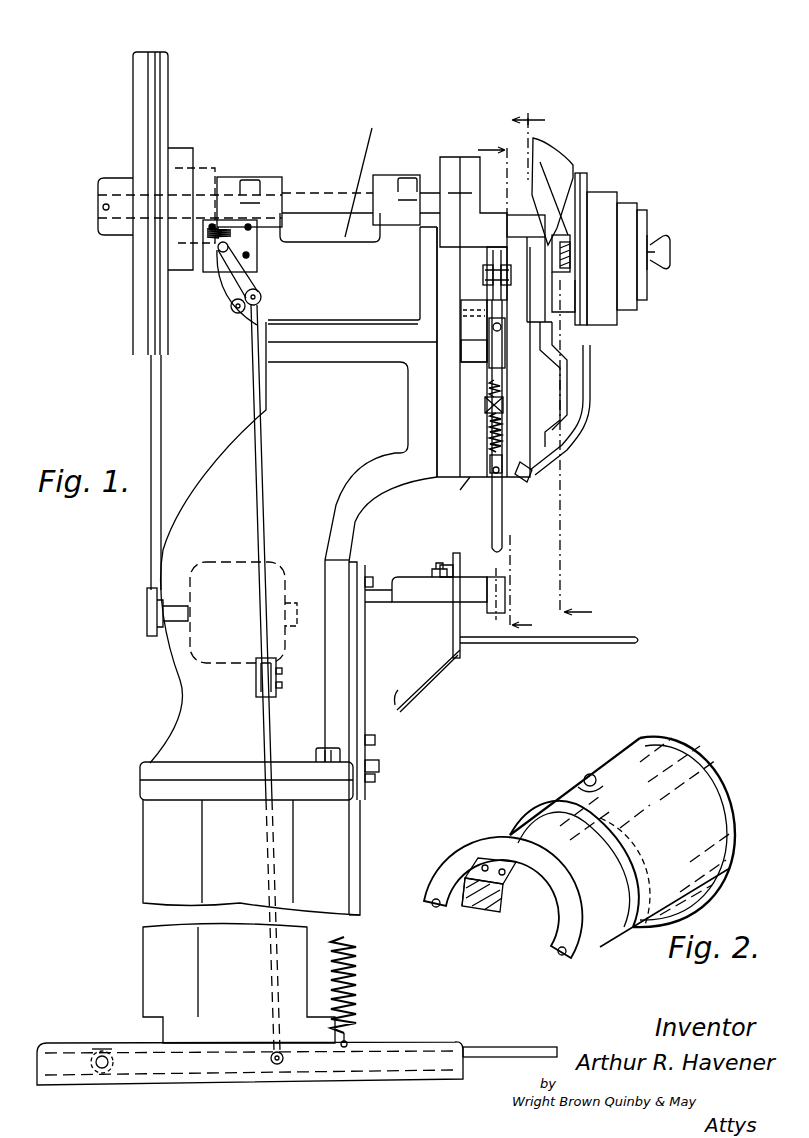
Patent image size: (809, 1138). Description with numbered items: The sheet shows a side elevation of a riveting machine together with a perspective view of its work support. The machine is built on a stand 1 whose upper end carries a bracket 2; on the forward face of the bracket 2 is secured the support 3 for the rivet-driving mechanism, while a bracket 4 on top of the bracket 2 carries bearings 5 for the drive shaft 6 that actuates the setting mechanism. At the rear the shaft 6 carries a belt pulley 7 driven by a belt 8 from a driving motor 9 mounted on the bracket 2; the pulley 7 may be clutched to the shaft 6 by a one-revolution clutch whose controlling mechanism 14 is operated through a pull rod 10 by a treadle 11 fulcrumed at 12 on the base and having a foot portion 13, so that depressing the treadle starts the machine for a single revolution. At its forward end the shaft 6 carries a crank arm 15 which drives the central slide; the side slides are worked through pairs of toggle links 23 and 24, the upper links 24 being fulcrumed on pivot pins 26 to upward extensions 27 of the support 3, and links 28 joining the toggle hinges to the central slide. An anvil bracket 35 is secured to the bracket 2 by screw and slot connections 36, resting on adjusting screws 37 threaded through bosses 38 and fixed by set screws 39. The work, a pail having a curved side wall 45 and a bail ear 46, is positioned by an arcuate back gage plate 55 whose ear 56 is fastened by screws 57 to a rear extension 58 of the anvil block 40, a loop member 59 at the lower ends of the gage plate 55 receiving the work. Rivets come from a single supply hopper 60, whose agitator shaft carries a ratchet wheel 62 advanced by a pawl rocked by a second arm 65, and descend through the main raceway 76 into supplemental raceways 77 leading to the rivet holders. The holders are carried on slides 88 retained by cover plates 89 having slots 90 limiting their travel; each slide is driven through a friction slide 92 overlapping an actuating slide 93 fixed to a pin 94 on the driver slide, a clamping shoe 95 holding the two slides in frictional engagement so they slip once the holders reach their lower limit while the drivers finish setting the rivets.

In FIG. 1, the stand 1 is at (160, 849).
In FIG. 1, the bracket 2 is at (195, 705).
In FIG. 1, the support 3 is at (445, 418).
In FIG. 1, the bracket 4 is at (468, 352).
In FIG. 1, the bearings 5 is at (268, 177).
In FIG. 1, the drive shaft 6 is at (312, 200).
In FIG. 1, the belt pulley 7 is at (163, 108).
In FIG. 1, the belt 8 is at (160, 417).
In FIG. 1, the driving motor 9 is at (222, 560).
In FIG. 1, the pull rod 10 is at (270, 460).
In FIG. 1, the treadle 11 is at (462, 1045).
In FIG. 1, the fulcrum 12 is at (104, 1050).
In FIG. 1, the foot portion 13 is at (522, 1047).
In FIG. 1, the controlling mechanism for one-revolution clutch 14 is at (232, 299).
In FIG. 1, the crank arm 15 is at (457, 156).
In FIG. 1, the toggle link 23 is at (490, 300).
In FIG. 1, the toggle link 24 is at (494, 247).
In FIG. 1, the pivot pin 26 is at (437, 240).
In FIG. 1, the upward extension 27 is at (518, 215).
In FIG. 1, the links 28 is at (484, 272).
In FIG. 1, the anvil bracket 35 is at (435, 678).
In FIG. 1, the screw and slot connections 36 is at (370, 560).
In FIG. 1, the adjusting screws 37 is at (376, 744).
In FIG. 1, the boss 38 is at (373, 780).
In FIG. 1, the set screw 39 is at (380, 768).
In FIG. 1, the anvil block 40 is at (500, 590).
In FIG. 2, the curved side wall 45 is at (637, 770).
In FIG. 2, the ear 46 is at (590, 773).
In FIG. 1, the arcuate back gage plate 55 is at (455, 625).
In FIG. 2, the arcuate back gage plate 55 is at (565, 928).
In FIG. 1, the ear 56 is at (454, 557).
In FIG. 2, the ear 56 is at (470, 902).
In FIG. 1, the screws 57 is at (437, 567).
In FIG. 2, the screws 57 is at (502, 868).
In FIG. 1, the rear extension 58 is at (407, 593).
In FIG. 2, the rear extension 58 is at (498, 908).
In FIG. 1, the loop member 59 is at (516, 644).
In FIG. 2, the loop member 59 is at (582, 833).
In FIG. 1, the supply hopper 60 is at (605, 195).
In FIG. 1, the ratchet wheel 62 is at (571, 258).
In FIG. 1, the second arm 65 is at (556, 232).
In FIG. 1, the main raceway 76 is at (580, 427).
In FIG. 1, the supplemental raceways 77 is at (533, 477).
In FIG. 1, the slides 88 is at (503, 518).
In FIG. 1, the cover plates 89 is at (458, 478).
In FIG. 1, the slot 90 is at (492, 478).
In FIG. 1, the friction slide 92 is at (499, 435).
In FIG. 1, the actuating slide 93 is at (500, 353).
In FIG. 1, the pin 94 is at (492, 330).
In FIG. 1, the clamping shoe 95 is at (504, 400).